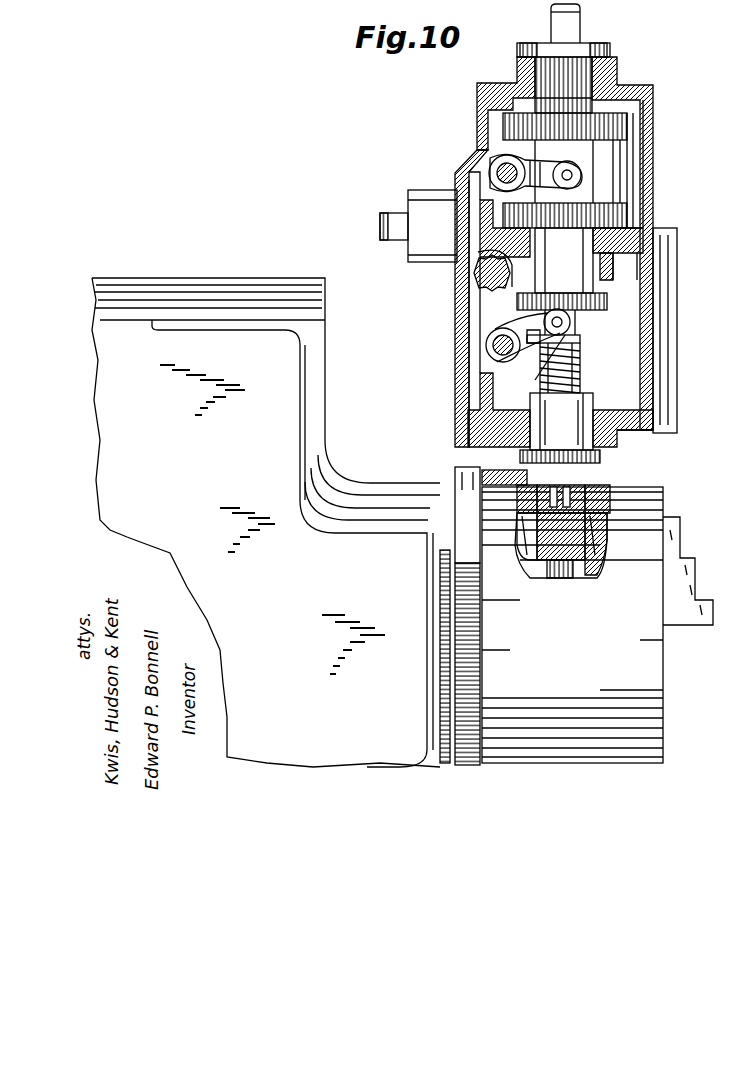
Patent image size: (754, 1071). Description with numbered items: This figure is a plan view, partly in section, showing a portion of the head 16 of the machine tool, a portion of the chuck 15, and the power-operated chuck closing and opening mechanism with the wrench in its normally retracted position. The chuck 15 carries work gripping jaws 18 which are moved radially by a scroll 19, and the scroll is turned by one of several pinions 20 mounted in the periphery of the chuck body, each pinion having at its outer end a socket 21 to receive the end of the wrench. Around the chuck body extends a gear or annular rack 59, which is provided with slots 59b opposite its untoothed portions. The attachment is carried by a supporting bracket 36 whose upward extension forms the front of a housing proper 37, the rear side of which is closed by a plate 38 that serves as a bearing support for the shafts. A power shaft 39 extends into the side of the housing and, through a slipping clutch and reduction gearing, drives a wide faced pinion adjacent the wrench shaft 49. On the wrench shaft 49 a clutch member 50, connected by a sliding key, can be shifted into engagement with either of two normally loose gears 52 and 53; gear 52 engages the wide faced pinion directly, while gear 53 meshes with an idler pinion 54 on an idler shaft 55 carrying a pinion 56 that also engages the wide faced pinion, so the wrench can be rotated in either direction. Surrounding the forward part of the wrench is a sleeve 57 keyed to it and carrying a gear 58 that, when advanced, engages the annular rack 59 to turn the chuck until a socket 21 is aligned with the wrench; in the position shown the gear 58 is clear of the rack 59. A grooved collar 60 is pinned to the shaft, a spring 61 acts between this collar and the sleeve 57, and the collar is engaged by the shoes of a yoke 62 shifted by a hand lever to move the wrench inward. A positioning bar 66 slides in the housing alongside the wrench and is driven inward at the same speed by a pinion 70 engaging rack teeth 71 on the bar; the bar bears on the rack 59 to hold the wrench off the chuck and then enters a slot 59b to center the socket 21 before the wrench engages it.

The chuck 15 is at (633, 677).
The head of the machine tool 16 is at (237, 312).
The work gripping jaws 18 is at (677, 545).
The scroll 19 is at (587, 547).
The pinions 20 is at (607, 517).
The socket 21 is at (567, 485).
The supporting bracket 36 is at (633, 437).
The housing 37 is at (668, 312).
The plate 38 is at (630, 82).
The power shaft 39 is at (392, 210).
The wrench shaft 49 is at (570, 24).
The clutch member 50 is at (562, 225).
The gear 52 is at (613, 127).
The gear 53 is at (640, 226).
The idler pinion 54 is at (640, 215).
The idler shaft 55 is at (640, 187).
The pinion 56 is at (650, 150).
The sleeve 57 is at (560, 415).
The gear 58 is at (520, 457).
The annular rack 59 is at (490, 462).
The slot 59b is at (413, 611).
The grooved collar 60 is at (580, 340).
The spring 61 is at (583, 369).
The yoke 62 is at (570, 322).
The positioning bar 66 is at (470, 388).
The pinion 70 is at (485, 300).
The rack teeth 71 is at (480, 265).